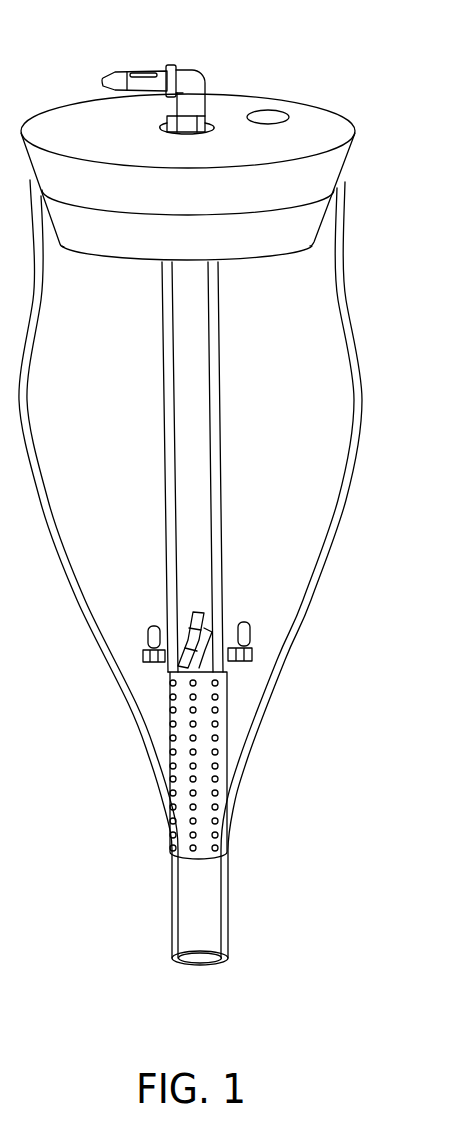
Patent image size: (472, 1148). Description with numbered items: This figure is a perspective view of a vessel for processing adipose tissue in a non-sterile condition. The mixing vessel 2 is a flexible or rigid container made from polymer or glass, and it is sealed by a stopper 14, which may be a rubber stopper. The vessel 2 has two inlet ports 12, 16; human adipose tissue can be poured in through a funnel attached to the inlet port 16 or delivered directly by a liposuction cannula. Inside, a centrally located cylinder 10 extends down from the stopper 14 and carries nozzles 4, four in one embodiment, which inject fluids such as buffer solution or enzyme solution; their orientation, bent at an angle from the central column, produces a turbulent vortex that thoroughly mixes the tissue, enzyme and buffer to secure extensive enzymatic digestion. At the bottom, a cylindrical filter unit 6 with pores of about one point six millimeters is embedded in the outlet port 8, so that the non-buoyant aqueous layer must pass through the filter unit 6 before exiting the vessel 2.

The mixing vessel 2 is at (333, 348).
The nozzles 4 is at (200, 612).
The filter unit 6 is at (207, 788).
The outlet port 8 is at (210, 916).
The centrally located cylinder 10 is at (197, 440).
The inlet port 12 is at (118, 70).
The stopper 14 is at (338, 155).
The inlet port 16 is at (270, 115).